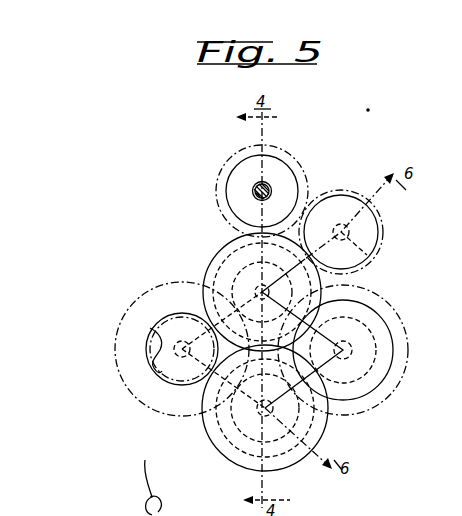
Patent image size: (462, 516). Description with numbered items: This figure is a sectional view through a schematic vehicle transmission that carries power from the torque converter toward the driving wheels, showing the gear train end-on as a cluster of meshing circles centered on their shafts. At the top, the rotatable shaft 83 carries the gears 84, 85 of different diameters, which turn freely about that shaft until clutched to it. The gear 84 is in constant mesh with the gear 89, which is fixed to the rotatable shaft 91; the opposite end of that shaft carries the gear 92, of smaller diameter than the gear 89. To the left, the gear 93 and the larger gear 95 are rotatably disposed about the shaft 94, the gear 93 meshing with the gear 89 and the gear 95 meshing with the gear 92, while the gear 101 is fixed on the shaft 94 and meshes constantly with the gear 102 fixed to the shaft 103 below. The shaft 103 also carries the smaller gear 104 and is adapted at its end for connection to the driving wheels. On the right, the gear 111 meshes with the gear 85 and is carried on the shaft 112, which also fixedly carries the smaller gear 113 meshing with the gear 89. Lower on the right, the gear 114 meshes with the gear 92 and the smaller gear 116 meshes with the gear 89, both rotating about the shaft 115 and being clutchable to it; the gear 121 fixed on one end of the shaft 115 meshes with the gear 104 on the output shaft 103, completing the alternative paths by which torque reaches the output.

The rotatable shaft 83 is at (253, 189).
The gear 84 is at (239, 163).
The gear 85 is at (287, 156).
The gear 89 is at (232, 238).
The rotatable shaft 91 is at (262, 292).
The gear 92 is at (224, 268).
The gear 93 is at (150, 364).
The shaft 94 is at (182, 357).
The gear 95 is at (168, 282).
The gear 101 is at (170, 314).
The gear 102 is at (205, 423).
The shaft 103 is at (284, 466).
The smaller gear 104 is at (232, 463).
The gear 111 is at (383, 229).
The shaft 112 is at (369, 257).
The gear 113 is at (339, 191).
The gear 114 is at (401, 383).
The shaft 115 is at (341, 360).
The gear 116 is at (396, 309).
The gear 121 is at (393, 345).